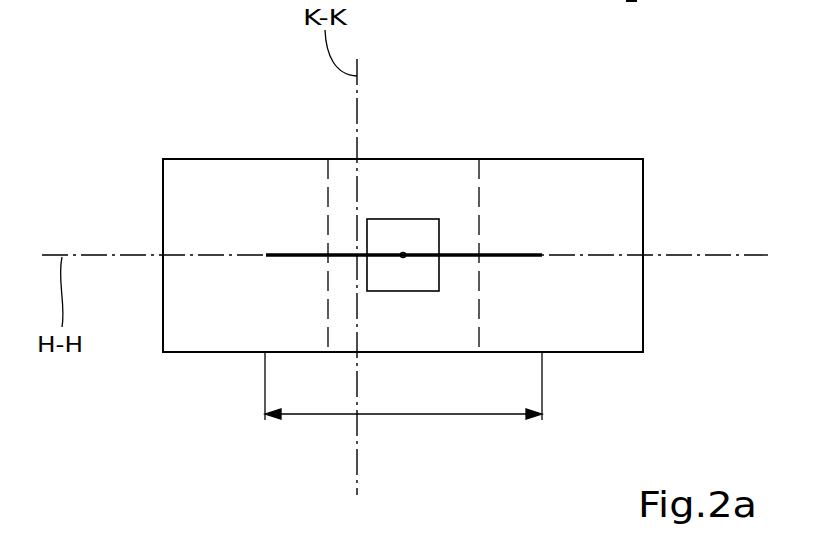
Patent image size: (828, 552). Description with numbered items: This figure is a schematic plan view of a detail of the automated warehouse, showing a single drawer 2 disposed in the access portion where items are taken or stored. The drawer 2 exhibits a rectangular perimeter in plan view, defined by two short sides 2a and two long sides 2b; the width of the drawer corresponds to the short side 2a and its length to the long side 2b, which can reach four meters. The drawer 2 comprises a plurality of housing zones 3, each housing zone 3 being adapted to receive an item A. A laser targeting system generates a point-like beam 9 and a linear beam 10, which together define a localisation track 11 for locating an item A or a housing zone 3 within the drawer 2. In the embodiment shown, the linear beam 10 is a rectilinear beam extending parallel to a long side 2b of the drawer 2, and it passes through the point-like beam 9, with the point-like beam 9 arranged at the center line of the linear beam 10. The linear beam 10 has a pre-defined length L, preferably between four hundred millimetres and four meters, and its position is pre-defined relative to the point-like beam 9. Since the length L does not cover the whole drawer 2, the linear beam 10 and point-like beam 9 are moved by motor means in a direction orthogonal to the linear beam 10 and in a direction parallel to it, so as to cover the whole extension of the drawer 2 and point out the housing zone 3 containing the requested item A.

The drawer 2 is at (618, 145).
The short side 2a is at (163, 240).
The long side 2b is at (239, 159).
The housing zone 3 is at (452, 183).
The point-like beam 9 is at (404, 253).
The linear beam 10 is at (303, 252).
The localisation track 11 is at (505, 253).
The item A is at (381, 237).
The length of linear beam L is at (402, 414).